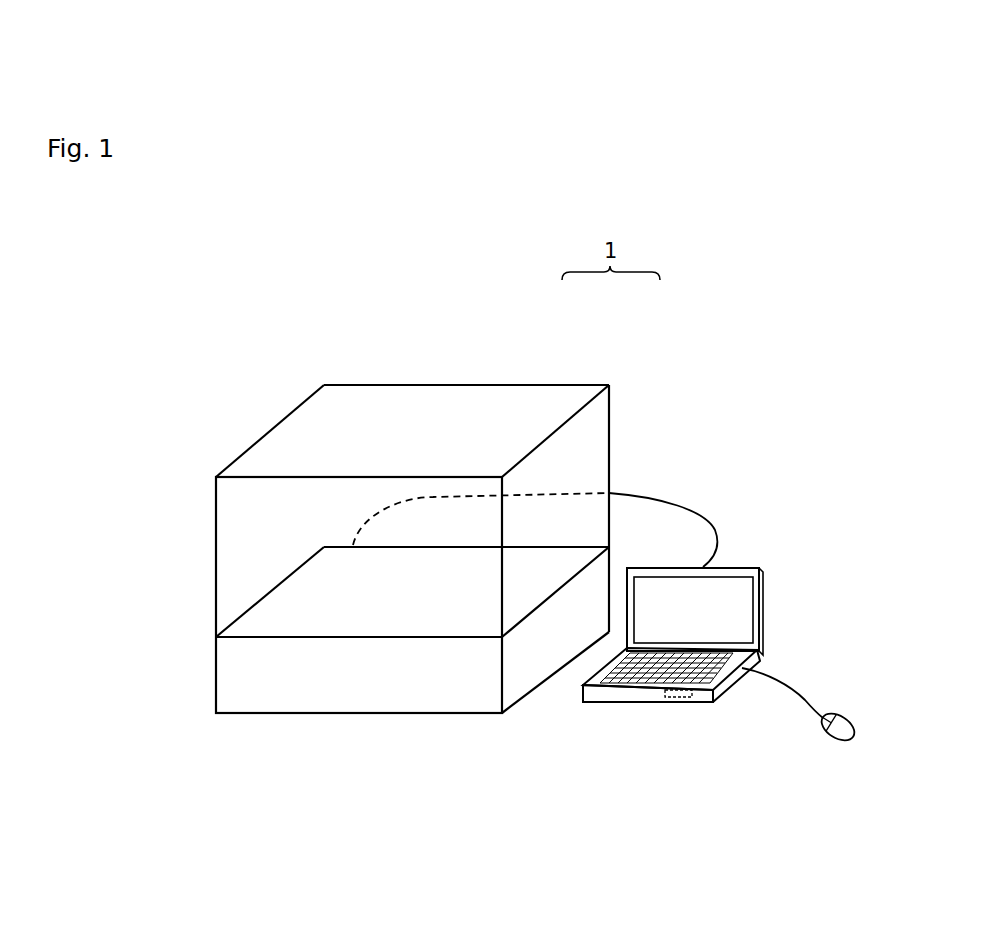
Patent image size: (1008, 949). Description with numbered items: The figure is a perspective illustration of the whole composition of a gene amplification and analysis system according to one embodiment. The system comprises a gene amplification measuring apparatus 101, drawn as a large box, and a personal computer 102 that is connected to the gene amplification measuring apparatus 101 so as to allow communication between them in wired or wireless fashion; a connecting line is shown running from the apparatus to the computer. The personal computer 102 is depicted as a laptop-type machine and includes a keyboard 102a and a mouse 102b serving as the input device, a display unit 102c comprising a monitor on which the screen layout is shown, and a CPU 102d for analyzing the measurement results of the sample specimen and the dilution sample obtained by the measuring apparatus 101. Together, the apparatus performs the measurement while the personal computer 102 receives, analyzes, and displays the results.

The gene amplification measuring apparatus 101 is at (540, 405).
The personal computer 102 is at (686, 562).
The keyboard 102a is at (600, 672).
The mouse 102b is at (843, 737).
The display unit 102c is at (738, 596).
The CPU 102d is at (693, 695).